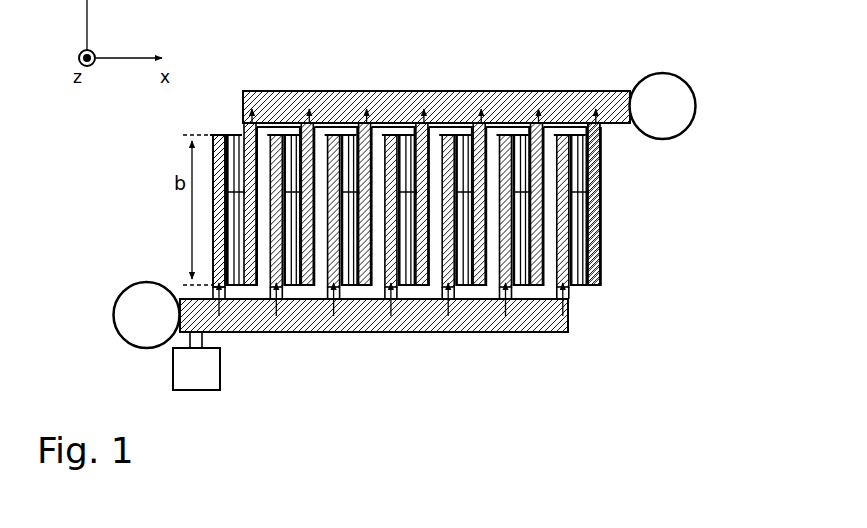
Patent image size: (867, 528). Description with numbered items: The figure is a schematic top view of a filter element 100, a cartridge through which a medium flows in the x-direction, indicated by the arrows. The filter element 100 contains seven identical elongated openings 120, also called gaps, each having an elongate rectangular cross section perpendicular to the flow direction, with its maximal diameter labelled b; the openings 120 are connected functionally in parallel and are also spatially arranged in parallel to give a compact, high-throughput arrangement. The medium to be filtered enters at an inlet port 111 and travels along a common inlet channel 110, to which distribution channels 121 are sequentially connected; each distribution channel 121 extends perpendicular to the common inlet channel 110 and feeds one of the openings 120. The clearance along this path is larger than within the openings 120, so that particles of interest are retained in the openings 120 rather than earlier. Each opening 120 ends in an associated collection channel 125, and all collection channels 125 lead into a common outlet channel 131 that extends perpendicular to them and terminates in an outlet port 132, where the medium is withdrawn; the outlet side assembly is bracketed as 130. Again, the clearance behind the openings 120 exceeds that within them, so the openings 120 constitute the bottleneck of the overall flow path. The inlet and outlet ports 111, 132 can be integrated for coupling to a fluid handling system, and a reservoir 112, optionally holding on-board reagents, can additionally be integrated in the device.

The filter element 100 is at (668, 202).
The common inlet channel 110 is at (404, 337).
The inlet port 111 is at (127, 303).
The reservoir 112 is at (207, 378).
The elongated openings 120 is at (577, 124).
The distribution channel 121 is at (212, 240).
The collection channel 125 is at (601, 266).
The second collector assembly 130 is at (504, 82).
The common outlet channel 131 is at (600, 92).
The outlet port 132 is at (660, 84).